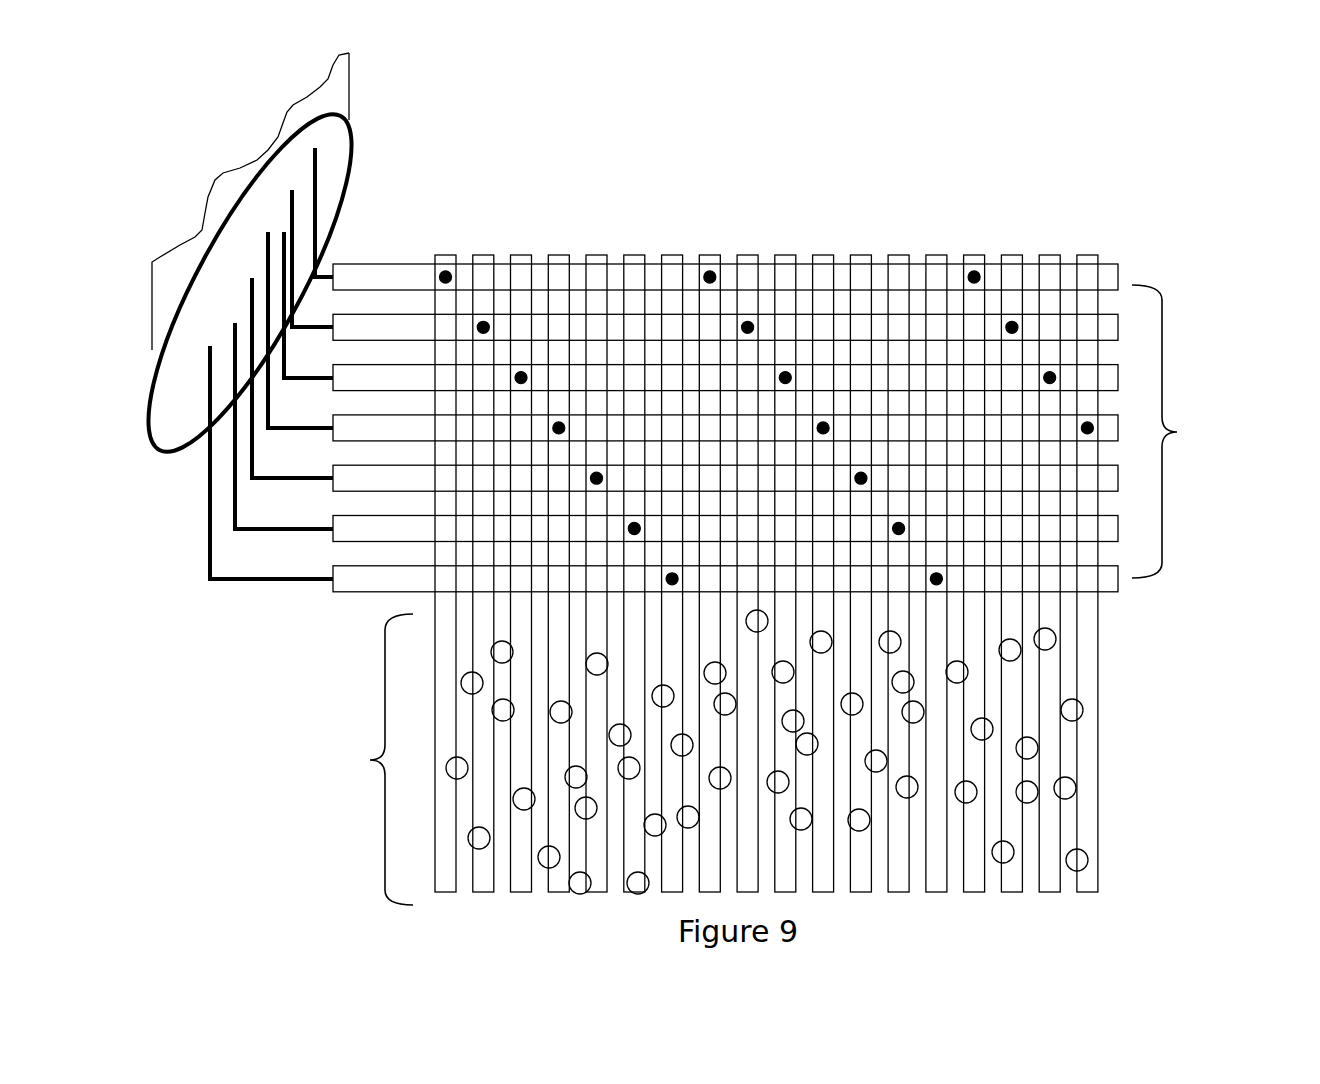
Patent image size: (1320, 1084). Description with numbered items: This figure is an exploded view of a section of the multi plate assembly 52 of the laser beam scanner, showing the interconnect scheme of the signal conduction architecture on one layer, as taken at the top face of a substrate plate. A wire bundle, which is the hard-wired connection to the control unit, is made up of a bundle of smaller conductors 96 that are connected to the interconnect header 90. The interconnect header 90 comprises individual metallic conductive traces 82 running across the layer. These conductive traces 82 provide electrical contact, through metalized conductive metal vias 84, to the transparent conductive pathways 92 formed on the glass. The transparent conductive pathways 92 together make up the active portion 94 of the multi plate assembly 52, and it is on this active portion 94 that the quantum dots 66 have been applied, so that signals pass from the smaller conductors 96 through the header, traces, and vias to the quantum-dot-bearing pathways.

The multi plate assembly 52 is at (970, 205).
The quantum dots 66 is at (1090, 850).
The conductive traces 82 is at (1120, 270).
The metal vias 84 is at (452, 277).
The interconnect header 90 is at (350, 112).
The transparent conductive pathways 92 is at (1087, 744).
The active portion 94 is at (370, 760).
The smaller conductors 96 is at (271, 585).